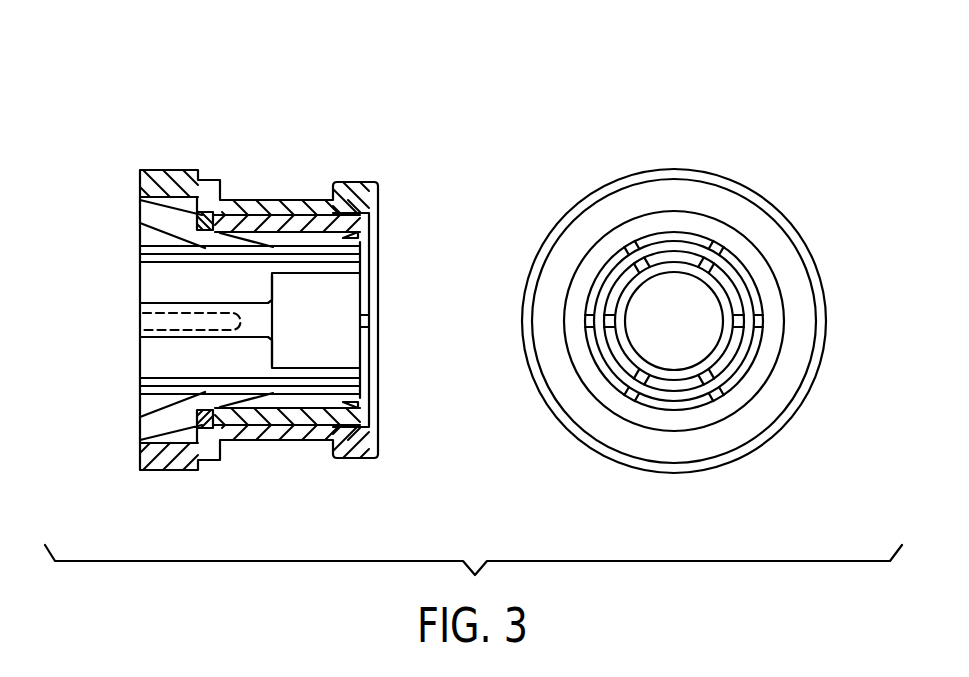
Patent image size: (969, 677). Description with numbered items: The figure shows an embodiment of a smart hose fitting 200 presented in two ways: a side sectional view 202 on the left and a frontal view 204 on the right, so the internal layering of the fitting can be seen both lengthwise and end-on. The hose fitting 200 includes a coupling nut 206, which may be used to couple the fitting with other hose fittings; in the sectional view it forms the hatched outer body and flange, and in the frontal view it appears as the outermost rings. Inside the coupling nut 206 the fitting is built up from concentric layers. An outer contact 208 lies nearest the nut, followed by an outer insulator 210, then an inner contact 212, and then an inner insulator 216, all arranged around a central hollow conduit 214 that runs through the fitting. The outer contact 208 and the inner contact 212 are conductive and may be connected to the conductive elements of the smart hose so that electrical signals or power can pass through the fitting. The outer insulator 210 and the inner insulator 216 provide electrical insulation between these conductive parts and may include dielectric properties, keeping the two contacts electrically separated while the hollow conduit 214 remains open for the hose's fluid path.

The smart hose fitting 200 is at (553, 78).
The side sectional view 202 is at (160, 127).
The frontal view 204 is at (720, 127).
The coupling nut 206 is at (355, 193).
The outer contact 208 is at (640, 240).
The outer insulator 210 is at (615, 278).
The inner contact 212 is at (612, 335).
The hollow conduit 214 is at (650, 330).
The inner insulator 216 is at (335, 375).